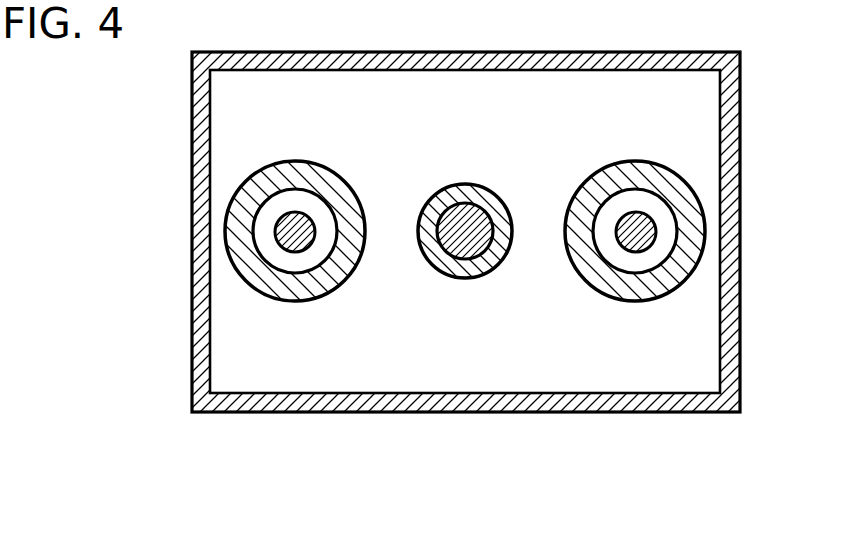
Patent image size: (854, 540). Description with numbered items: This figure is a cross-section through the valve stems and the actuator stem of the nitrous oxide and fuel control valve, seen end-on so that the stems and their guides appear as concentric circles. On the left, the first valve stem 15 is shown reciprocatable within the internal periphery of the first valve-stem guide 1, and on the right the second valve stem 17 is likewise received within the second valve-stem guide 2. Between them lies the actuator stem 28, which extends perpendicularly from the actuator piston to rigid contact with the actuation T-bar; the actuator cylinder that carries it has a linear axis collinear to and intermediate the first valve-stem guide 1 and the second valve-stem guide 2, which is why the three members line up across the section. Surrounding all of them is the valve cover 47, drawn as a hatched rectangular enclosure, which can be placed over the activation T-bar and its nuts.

The valve cover 47 is at (197, 225).
The first valve-stem guide 1 is at (272, 295).
The first valve stem 15 is at (297, 232).
The actuator stem 28 is at (463, 277).
The second valve stem 17 is at (637, 235).
The second valve-stem guide 2 is at (672, 280).